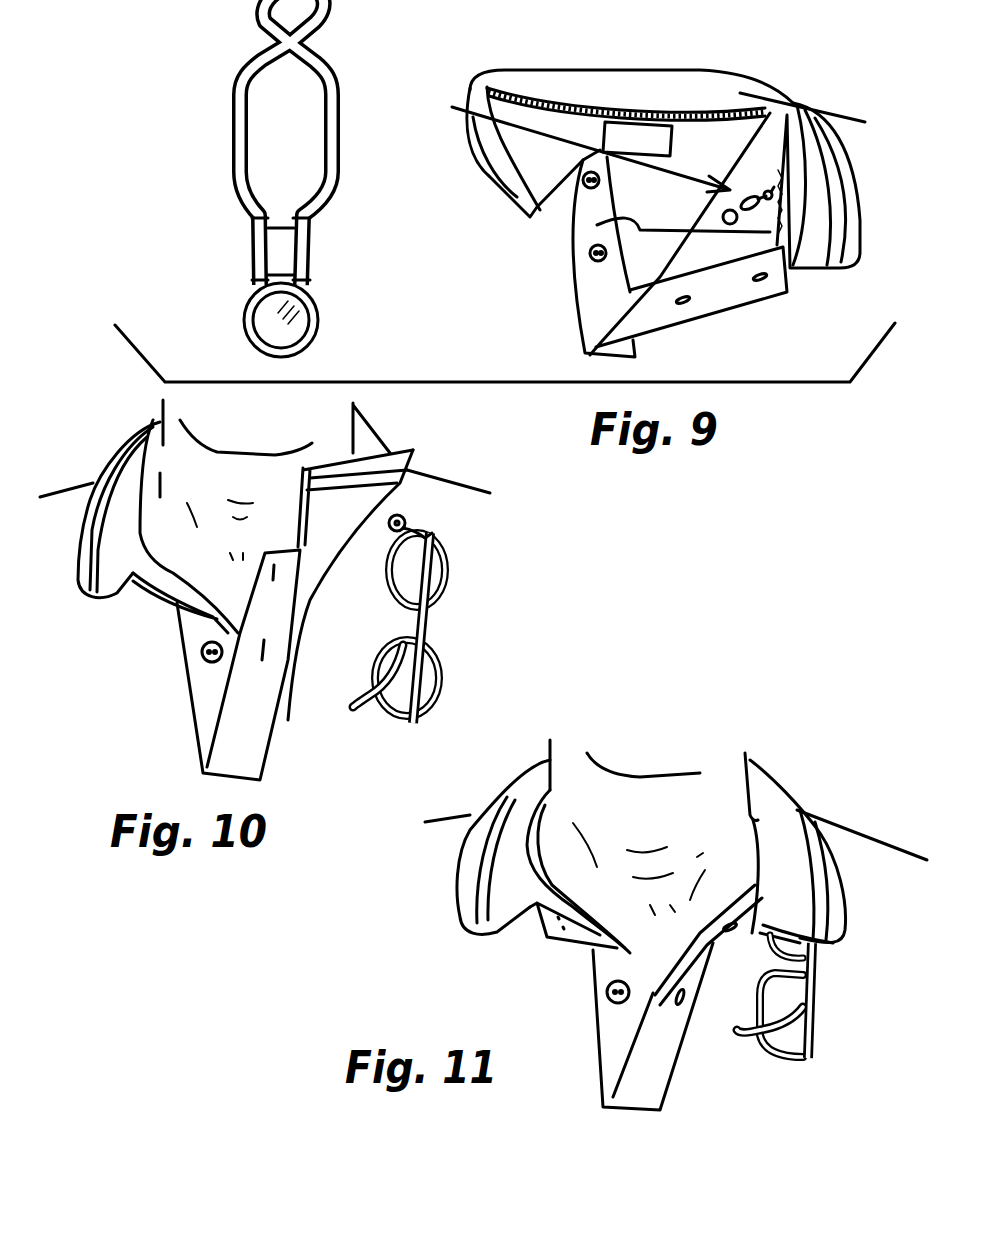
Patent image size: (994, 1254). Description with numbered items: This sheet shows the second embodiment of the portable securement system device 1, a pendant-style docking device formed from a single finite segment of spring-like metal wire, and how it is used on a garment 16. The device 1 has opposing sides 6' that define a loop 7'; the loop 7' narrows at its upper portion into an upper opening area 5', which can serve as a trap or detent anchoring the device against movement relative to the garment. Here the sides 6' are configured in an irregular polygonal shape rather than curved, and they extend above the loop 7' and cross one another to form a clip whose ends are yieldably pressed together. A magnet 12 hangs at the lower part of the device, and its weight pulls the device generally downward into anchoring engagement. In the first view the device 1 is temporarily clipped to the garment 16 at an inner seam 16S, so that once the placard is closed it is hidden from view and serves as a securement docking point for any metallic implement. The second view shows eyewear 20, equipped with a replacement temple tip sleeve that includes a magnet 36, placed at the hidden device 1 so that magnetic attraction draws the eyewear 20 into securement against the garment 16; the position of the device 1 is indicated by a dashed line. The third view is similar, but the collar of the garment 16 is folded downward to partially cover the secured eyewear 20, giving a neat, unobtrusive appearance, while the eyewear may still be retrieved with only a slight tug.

In FIG. 10, the portable securement system device 1 is at (383, 537).
In FIG. 9, the upper opening area 5' is at (249, 46).
In FIG. 9, the sides 6' is at (272, 103).
In FIG. 9, the loop 7' is at (315, 142).
In FIG. 9, the magnet 12 is at (261, 312).
In FIG. 9, the garment 16 is at (527, 56).
In FIG. 10, the garment 16 is at (456, 476).
In FIG. 11, the garment 16 is at (834, 816).
In FIG. 9, the inner seam 16S is at (597, 225).
In FIG. 10, the eyewear 20 is at (453, 593).
In FIG. 11, the eyewear 20 is at (820, 1007).
In FIG. 10, the magnet 36 is at (410, 517).